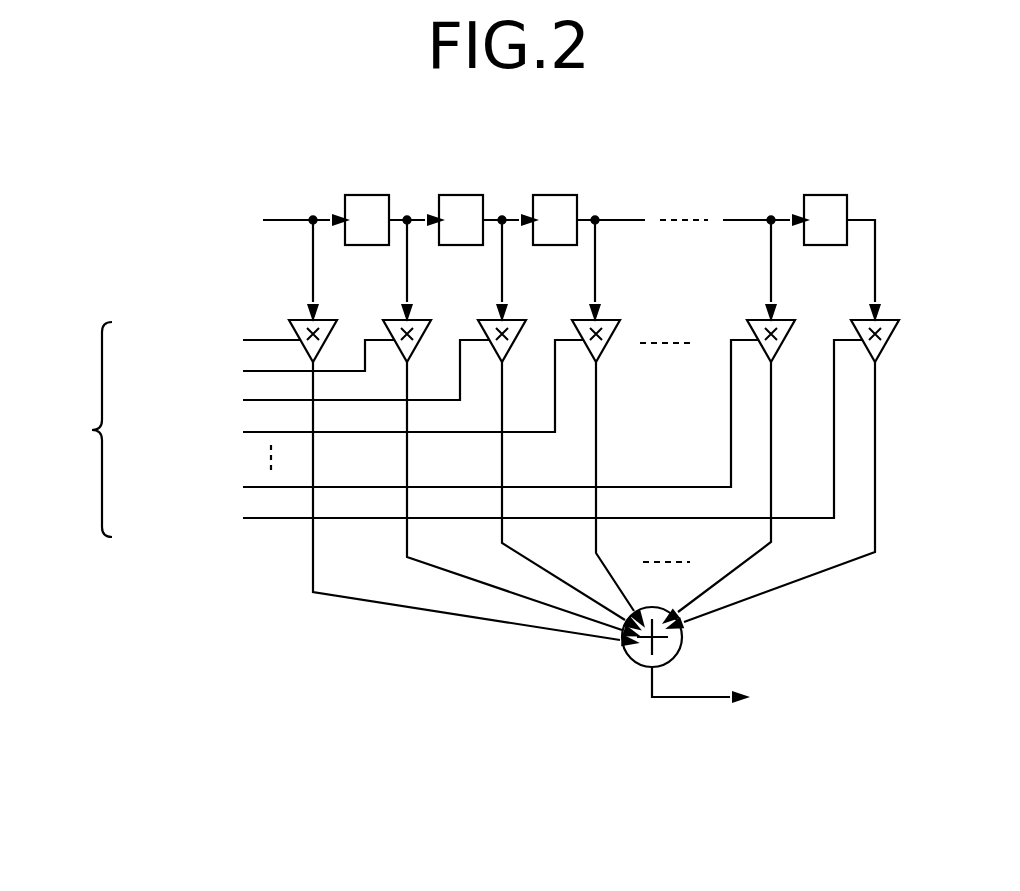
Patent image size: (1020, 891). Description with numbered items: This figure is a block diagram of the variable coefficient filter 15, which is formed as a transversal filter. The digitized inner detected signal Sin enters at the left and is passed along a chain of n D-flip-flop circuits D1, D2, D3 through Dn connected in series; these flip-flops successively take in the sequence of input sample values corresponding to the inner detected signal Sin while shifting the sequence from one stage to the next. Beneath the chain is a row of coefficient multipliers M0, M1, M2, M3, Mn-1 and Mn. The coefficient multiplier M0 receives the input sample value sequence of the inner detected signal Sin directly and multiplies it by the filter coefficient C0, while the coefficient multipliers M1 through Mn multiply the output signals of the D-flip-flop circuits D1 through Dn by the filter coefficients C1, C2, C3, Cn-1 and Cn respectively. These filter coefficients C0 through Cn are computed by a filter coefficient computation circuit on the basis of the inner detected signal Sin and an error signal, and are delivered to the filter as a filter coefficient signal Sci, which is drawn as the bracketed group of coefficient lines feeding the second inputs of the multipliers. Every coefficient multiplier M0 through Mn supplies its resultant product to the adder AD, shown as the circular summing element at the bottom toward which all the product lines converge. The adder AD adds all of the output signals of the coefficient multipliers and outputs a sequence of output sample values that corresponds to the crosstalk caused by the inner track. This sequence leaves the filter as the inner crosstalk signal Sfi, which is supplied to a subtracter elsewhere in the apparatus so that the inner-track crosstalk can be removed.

The variable coefficient filter 15 is at (628, 853).
The inner detected signal Sin is at (272, 218).
The D-flip-flop circuit D1 is at (374, 195).
The D-flip-flop circuit D2 is at (467, 195).
The D-flip-flop circuit D3 is at (562, 195).
The D-flip-flop circuit Dn is at (831, 195).
The coefficient multiplier M0 is at (300, 318).
The coefficient multiplier M1 is at (394, 318).
The coefficient multiplier M2 is at (489, 318).
The coefficient multiplier M3 is at (583, 318).
The coefficient multiplier Mn-1 is at (757, 318).
The coefficient multiplier Mn is at (865, 318).
The filter coefficient signal Sci is at (449, 429).
The filter coefficient C0 is at (250, 339).
The filter coefficient C1 is at (297, 362).
The filter coefficient C2 is at (344, 377).
The filter coefficient C3 is at (391, 393).
The filter coefficient Cn-1 is at (464, 421).
The filter coefficient Cn is at (531, 437).
The adder AD is at (683, 652).
The inner crosstalk signal Sfi is at (680, 699).